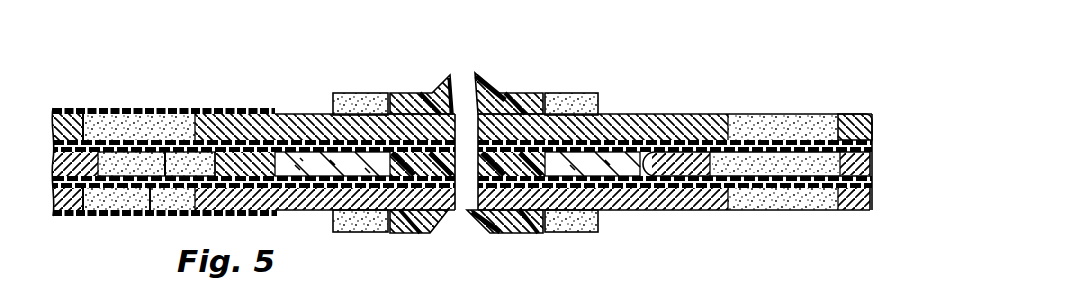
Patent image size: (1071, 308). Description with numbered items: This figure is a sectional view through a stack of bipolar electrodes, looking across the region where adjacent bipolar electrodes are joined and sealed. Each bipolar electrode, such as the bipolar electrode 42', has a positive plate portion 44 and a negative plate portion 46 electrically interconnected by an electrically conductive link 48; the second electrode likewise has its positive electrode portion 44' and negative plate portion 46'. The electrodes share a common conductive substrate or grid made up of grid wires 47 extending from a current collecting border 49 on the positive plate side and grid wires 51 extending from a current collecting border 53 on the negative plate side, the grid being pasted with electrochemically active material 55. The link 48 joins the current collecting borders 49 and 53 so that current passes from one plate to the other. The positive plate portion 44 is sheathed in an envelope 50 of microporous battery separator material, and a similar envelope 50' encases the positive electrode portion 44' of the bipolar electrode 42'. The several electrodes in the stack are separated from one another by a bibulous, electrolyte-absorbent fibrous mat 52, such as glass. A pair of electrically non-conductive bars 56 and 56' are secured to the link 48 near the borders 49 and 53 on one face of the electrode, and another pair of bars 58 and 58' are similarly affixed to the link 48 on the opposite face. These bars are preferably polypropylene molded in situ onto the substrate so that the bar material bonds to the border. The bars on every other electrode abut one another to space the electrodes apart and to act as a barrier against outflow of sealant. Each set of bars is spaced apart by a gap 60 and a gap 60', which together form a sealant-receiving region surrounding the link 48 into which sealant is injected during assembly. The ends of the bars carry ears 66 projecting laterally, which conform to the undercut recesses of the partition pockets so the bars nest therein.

The bipolar electrode 42' is at (544, 148).
The positive plate portion 44 is at (70, 128).
The positive electrode portion 44' is at (874, 148).
The negative plate portion 46 is at (837, 101).
The negative plate portion 46' is at (329, 105).
The grid wires 47 is at (66, 124).
The electrically conductive link 48 is at (461, 140).
The current collecting border 49 is at (246, 175).
The envelope 50 is at (156, 110).
The envelope 50' is at (756, 209).
The grid wires 51 is at (873, 146).
The fibrous mat 52 is at (162, 142).
The current collecting border 53 is at (657, 120).
The electrochemically active material 55 is at (137, 152).
The electrically non-conductive bar 56 is at (422, 109).
The electrically non-conductive bar 56' is at (557, 113).
The bar 58 is at (414, 243).
The bar 58' is at (521, 248).
The gap 60 is at (494, 88).
The gap 60' is at (463, 239).
The ear 66 is at (355, 103).